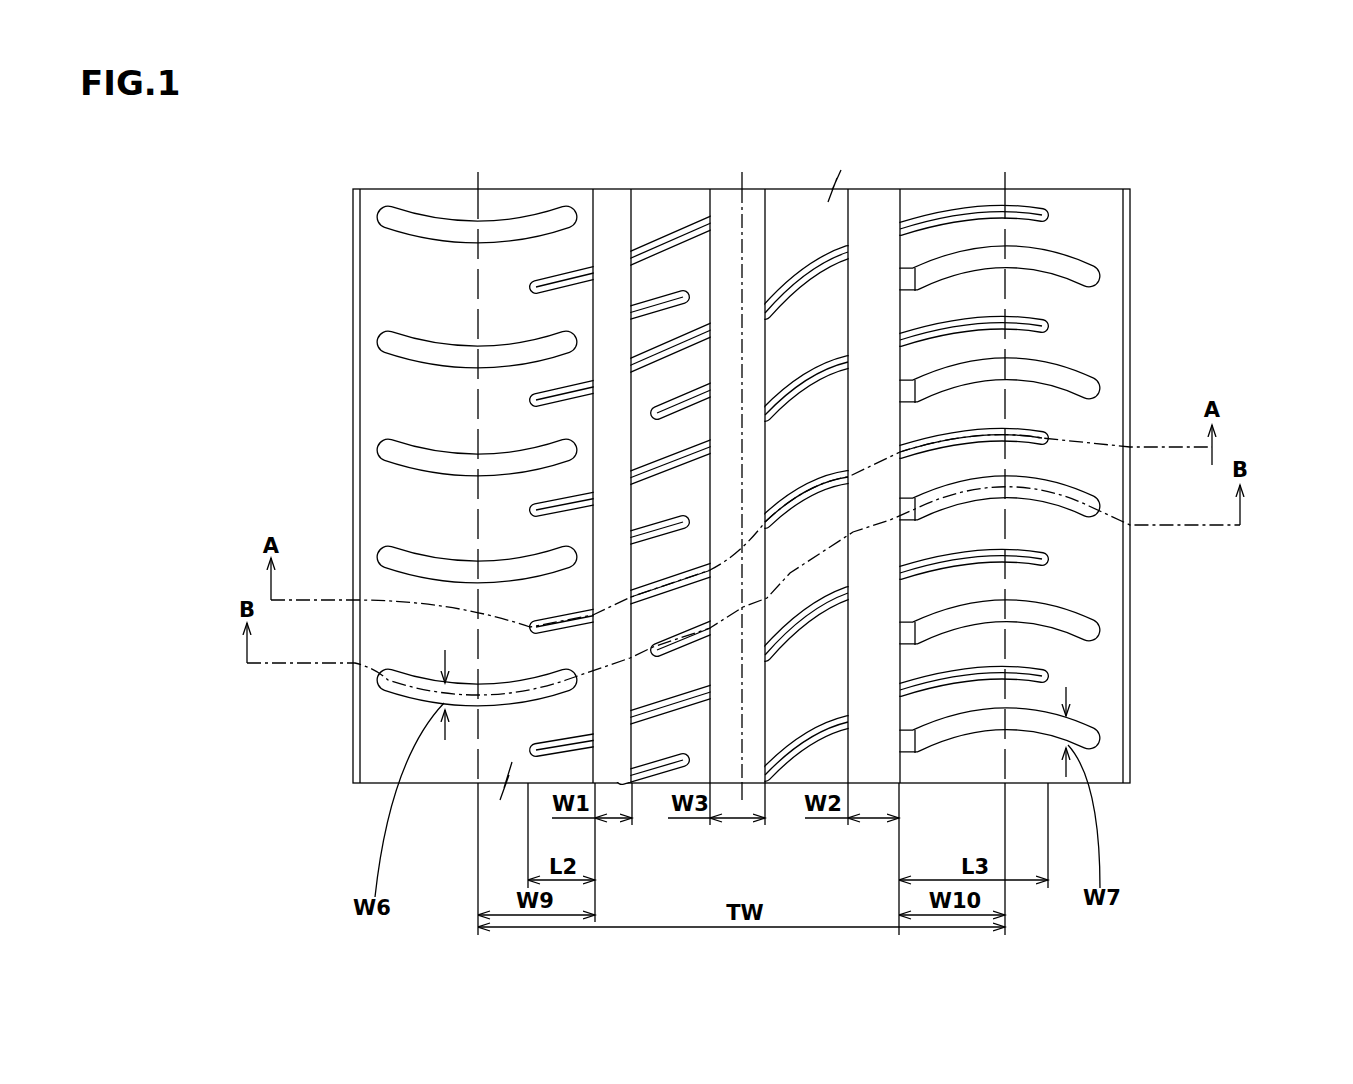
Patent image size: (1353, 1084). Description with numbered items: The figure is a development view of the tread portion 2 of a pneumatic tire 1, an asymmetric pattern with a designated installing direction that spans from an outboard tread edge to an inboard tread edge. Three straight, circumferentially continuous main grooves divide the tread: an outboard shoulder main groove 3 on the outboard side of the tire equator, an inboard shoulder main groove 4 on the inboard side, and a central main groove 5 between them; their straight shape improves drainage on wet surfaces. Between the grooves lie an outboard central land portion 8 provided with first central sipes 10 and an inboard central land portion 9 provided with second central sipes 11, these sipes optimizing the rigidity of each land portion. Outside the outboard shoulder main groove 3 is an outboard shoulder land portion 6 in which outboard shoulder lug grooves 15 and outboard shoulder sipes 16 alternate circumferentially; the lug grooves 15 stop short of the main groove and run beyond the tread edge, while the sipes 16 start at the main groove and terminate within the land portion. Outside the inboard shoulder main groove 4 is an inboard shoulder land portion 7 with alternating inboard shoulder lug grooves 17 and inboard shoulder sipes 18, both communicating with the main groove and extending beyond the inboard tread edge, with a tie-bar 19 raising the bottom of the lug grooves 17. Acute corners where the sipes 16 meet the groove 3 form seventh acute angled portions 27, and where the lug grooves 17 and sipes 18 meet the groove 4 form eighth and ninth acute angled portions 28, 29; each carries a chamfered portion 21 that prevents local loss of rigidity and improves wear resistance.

The pneumatic tire 1 is at (1128, 186).
The tread portion 2 is at (1036, 186).
The outboard shoulder main groove 3 is at (607, 220).
The inboard shoulder main groove 4 is at (880, 208).
The central main groove 5 is at (713, 205).
The outboard shoulder land portion 6 is at (487, 513).
The inboard shoulder land portion 7 is at (1041, 491).
The outboard central land portion 8 is at (502, 460).
The inboard central land portion 9 is at (958, 508).
The first central sipes 10 is at (655, 462).
The second central sipes 11 is at (822, 492).
The outboard shoulder lug grooves 15 is at (385, 214).
The outboard shoulder sipes 16 is at (530, 292).
The inboard shoulder lug grooves 17 is at (1048, 525).
The inboard shoulder sipes 18 is at (1050, 213).
The tie-bar 19 is at (918, 289).
The chamfered portion 21 is at (487, 513).
The seventh acute angled portion 27 is at (487, 513).
The eighth acute angled portion 28 is at (958, 508).
The ninth acute angled portion 29 is at (1041, 491).